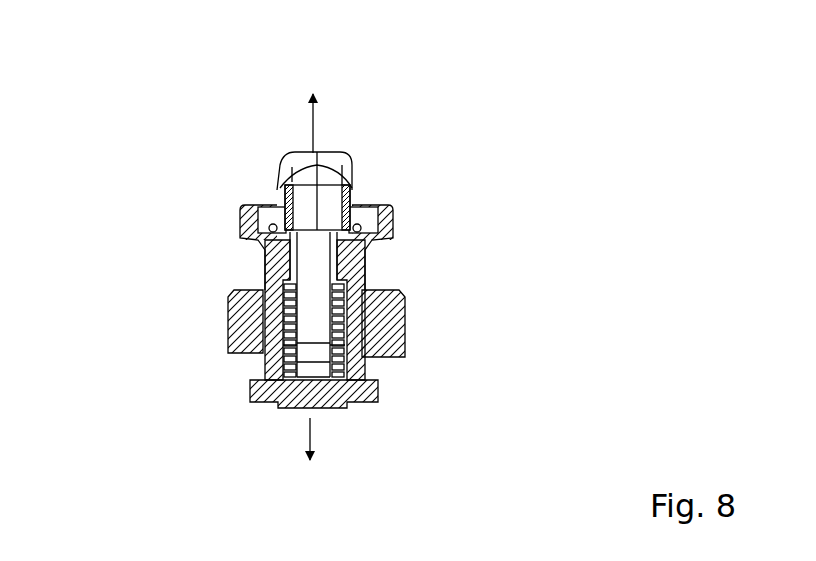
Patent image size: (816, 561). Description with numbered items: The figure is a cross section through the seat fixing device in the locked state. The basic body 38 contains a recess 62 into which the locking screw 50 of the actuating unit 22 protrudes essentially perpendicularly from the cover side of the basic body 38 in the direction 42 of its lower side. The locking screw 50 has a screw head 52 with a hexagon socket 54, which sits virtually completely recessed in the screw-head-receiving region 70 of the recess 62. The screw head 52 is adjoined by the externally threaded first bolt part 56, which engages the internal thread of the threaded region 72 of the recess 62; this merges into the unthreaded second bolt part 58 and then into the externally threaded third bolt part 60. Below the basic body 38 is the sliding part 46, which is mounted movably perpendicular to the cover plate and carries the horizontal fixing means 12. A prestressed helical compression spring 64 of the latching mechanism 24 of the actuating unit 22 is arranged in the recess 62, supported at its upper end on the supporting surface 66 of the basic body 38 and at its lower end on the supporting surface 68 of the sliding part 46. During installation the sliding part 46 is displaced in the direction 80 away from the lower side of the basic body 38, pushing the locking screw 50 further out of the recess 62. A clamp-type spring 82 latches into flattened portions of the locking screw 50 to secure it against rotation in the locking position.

The horizontal fixing means 12 is at (272, 330).
The actuating unit 22 is at (293, 150).
The latching mechanism 24 is at (272, 360).
The basic body 38 is at (400, 240).
The direction 42 is at (313, 430).
The sliding part 46 is at (409, 323).
The locking screw 50 is at (354, 185).
The screw head 52 is at (376, 205).
The hexagon socket 54 is at (350, 196).
The first bolt part 56 is at (328, 255).
The second bolt part 58 is at (320, 315).
The third bolt part 60 is at (322, 361).
The recess 62 is at (270, 361).
The helical compression spring 64 is at (254, 366).
The supporting surface 66 is at (262, 305).
The supporting surface 68 is at (252, 372).
The screw-head-receiving region 70 is at (245, 232).
The threaded region 72 is at (243, 258).
The direction 80 is at (313, 120).
The clamp-type spring 82 is at (277, 192).